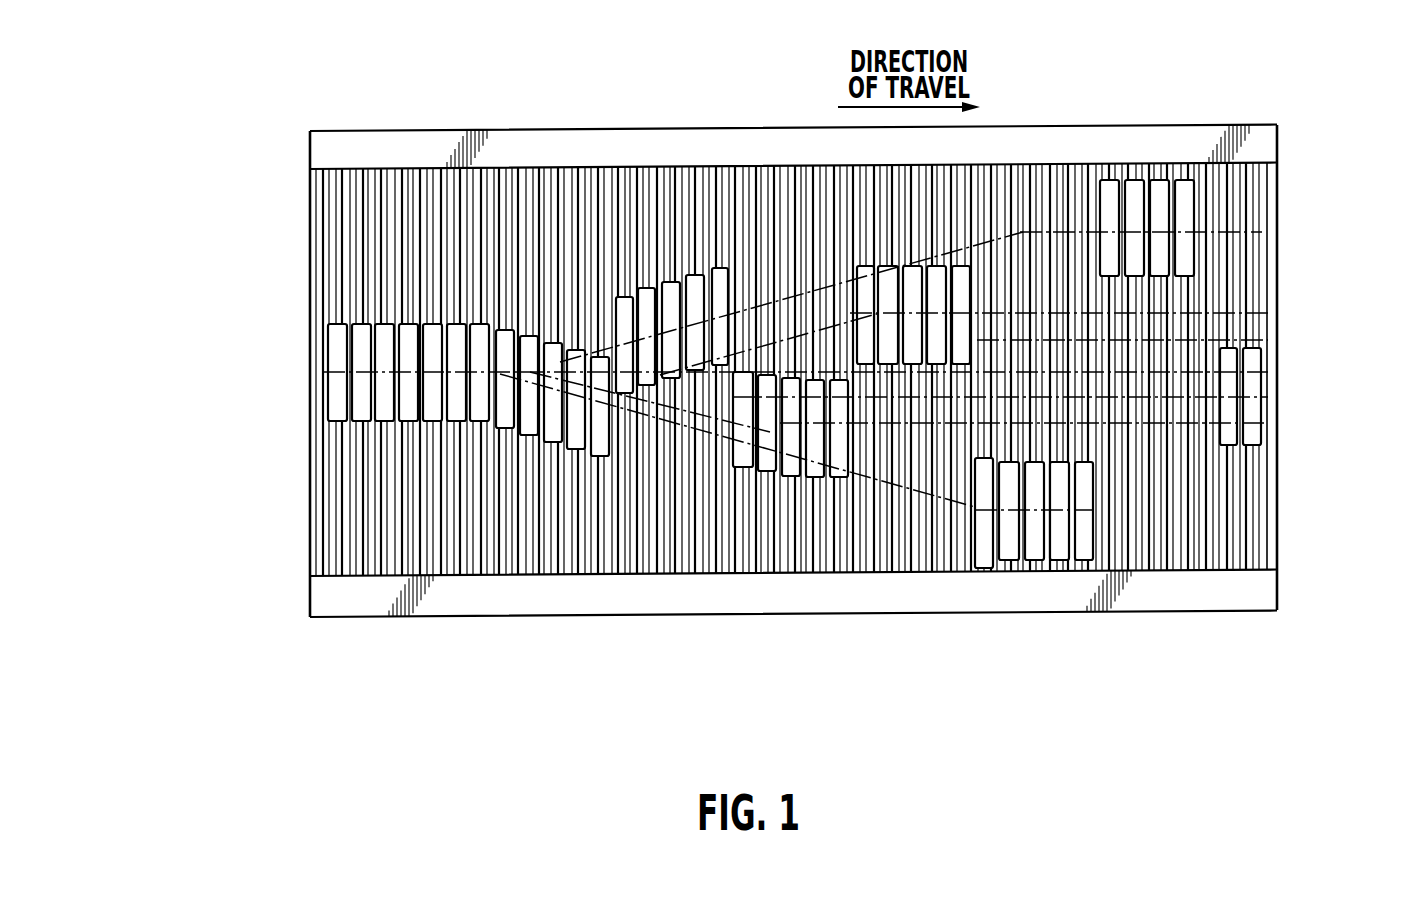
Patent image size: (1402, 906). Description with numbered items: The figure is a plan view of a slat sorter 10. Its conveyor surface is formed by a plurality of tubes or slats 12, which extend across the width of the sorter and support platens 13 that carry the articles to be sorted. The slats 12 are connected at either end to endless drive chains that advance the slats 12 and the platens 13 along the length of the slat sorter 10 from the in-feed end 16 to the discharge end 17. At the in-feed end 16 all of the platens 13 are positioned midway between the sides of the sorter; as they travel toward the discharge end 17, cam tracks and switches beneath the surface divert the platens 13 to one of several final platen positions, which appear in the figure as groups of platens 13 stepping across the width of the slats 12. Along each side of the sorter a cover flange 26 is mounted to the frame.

The slat sorter 10 is at (775, 100).
The slats 12 is at (560, 216).
The platens 13 is at (385, 398).
The in-feed end 16 is at (290, 538).
The discharge end 17 is at (1288, 455).
The cover flange 26 is at (1170, 138).